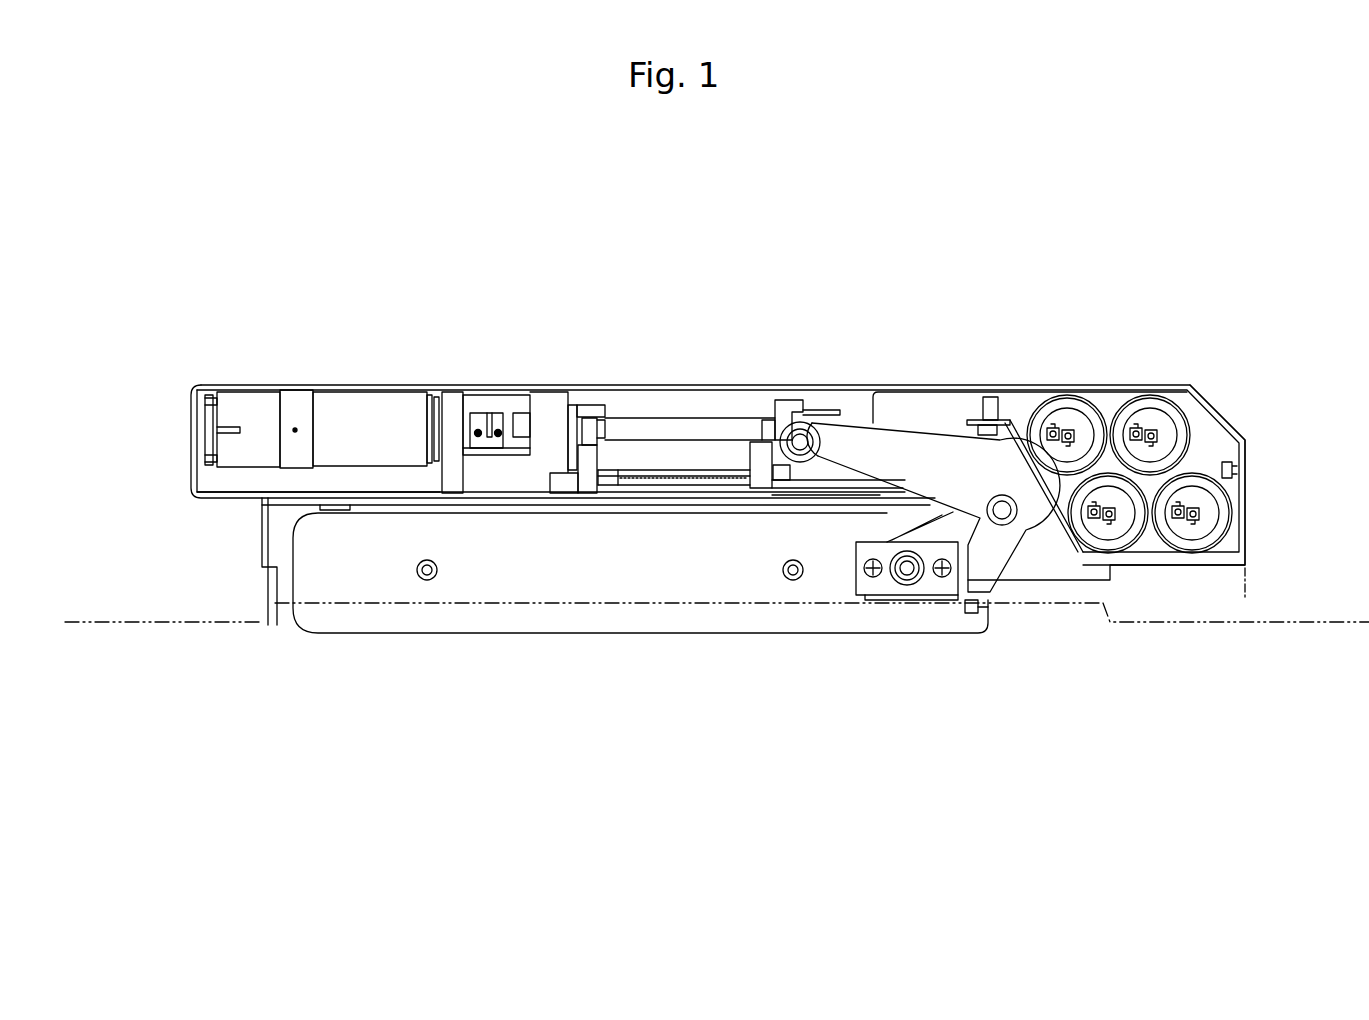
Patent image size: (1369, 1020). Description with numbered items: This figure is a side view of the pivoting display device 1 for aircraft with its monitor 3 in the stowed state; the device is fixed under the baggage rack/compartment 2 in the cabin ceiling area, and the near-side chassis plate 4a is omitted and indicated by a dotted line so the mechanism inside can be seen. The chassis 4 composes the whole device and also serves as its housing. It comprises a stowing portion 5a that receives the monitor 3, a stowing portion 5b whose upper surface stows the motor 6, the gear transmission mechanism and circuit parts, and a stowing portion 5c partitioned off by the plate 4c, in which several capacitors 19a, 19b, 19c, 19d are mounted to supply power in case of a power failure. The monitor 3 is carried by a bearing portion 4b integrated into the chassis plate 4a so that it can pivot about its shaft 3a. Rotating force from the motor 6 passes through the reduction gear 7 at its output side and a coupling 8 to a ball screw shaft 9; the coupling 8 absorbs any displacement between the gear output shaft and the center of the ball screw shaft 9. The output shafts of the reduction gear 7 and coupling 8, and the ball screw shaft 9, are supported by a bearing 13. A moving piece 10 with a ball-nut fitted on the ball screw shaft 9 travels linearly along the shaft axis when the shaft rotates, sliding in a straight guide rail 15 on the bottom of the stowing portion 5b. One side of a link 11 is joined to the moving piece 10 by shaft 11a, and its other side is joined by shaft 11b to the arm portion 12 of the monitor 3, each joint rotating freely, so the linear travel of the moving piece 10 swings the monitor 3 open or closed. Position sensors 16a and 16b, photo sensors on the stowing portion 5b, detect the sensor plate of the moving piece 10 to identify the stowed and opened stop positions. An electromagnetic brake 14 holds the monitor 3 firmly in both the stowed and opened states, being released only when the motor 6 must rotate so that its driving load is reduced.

The pivoting display device 1 is at (652, 324).
The baggage rack/compartment 2 is at (196, 630).
The monitor 3 is at (487, 622).
The shaft 3a is at (908, 585).
The chassis 4 is at (194, 497).
The chassis plate 4a is at (809, 606).
The bearing portion 4b is at (873, 578).
The plate 4c is at (1010, 420).
The stowing portion 5a is at (285, 556).
The stowing portion 5b is at (208, 472).
The stowing portion 5c is at (1212, 416).
The motor 6 is at (298, 402).
The reduction gear 7 is at (373, 403).
The coupling 8 is at (487, 415).
The ball screw shaft 9 is at (682, 423).
The moving piece 10 is at (782, 398).
The link 11 is at (906, 445).
The shaft 11a is at (802, 440).
The shaft 11b is at (1003, 512).
The arm portion 12 is at (989, 630).
The bearing 13 is at (548, 412).
The electromagnetic brake 14 is at (247, 405).
The guide rail 15 is at (684, 478).
The position sensor 16a is at (762, 465).
The position sensor 16b is at (586, 470).
The capacitor 19a is at (1079, 418).
The capacitor 19b is at (1163, 420).
The capacitor 19c is at (1112, 532).
The capacitor 19d is at (1197, 532).